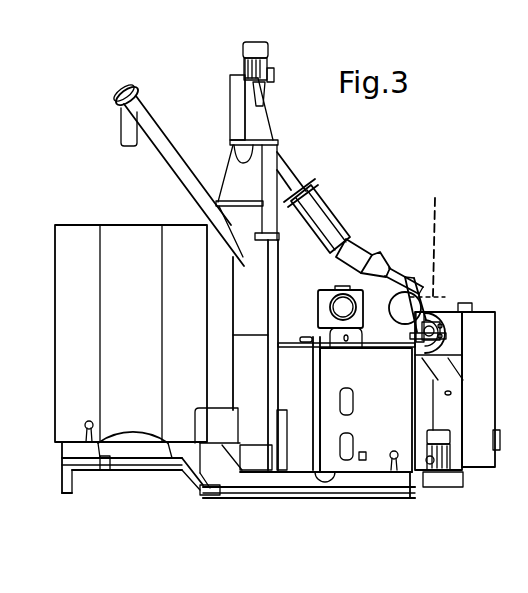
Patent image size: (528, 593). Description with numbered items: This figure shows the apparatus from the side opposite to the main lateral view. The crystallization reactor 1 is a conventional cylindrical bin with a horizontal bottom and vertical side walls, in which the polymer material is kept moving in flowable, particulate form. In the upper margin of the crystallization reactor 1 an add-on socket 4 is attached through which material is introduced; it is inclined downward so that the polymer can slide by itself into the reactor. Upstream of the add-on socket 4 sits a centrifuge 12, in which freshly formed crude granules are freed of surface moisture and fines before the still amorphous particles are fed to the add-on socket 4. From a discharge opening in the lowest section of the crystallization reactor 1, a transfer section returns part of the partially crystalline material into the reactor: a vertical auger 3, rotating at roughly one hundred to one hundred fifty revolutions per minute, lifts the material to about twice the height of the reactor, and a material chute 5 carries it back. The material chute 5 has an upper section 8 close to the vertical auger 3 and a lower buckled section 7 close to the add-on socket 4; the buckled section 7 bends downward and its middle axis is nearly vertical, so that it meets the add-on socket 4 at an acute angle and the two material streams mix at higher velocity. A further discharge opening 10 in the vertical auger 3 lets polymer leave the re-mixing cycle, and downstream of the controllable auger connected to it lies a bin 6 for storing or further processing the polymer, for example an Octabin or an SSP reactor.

The crystallization reactor 1 is at (373, 465).
The vertical auger 3 is at (243, 313).
The add-on socket 4 is at (410, 338).
The material chute 5 is at (373, 238).
The bin 6 is at (120, 233).
The buckled section 7 is at (463, 228).
The upper section 8 is at (316, 180).
The discharge opening 10 is at (228, 156).
The centrifuge 12 is at (483, 318).